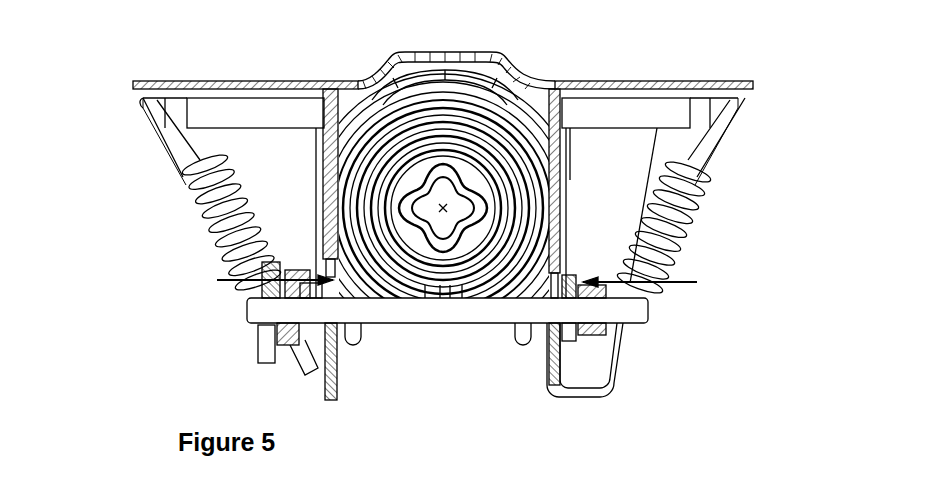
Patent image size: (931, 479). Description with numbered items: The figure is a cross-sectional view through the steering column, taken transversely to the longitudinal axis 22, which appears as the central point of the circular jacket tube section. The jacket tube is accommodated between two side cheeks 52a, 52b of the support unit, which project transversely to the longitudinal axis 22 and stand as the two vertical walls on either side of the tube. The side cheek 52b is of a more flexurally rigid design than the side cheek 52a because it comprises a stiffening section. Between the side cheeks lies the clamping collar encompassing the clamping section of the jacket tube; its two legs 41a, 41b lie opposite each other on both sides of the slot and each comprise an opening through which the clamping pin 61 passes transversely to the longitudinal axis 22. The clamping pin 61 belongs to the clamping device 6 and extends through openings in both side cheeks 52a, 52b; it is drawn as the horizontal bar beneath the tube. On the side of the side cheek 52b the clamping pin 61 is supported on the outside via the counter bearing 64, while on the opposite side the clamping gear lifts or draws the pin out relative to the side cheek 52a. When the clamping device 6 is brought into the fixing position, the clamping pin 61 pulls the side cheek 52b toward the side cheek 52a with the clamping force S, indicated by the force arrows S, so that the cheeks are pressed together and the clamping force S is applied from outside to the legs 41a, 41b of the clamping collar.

The side cheek 52a is at (322, 132).
The side cheek 52b is at (570, 130).
The leg 41a is at (322, 222).
The leg 41b is at (520, 272).
The longitudinal axis 22 is at (443, 208).
The clamping pin 61 is at (457, 308).
The counter bearing 64 is at (603, 328).
The clamping device 6 is at (241, 342).
The clamping force S is at (226, 281).